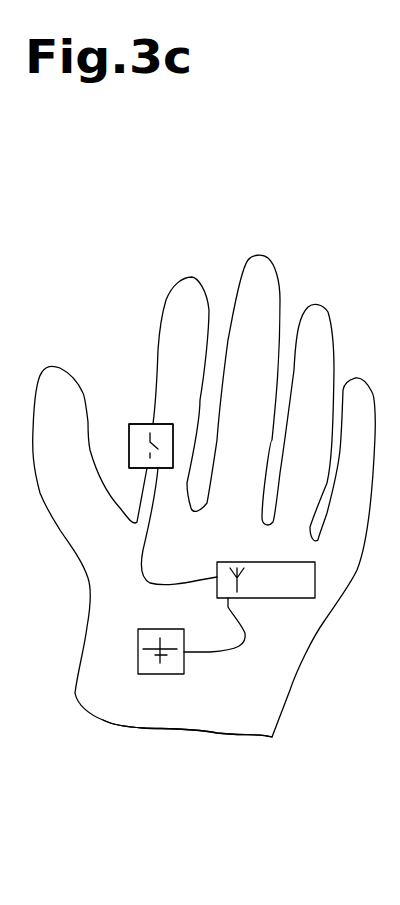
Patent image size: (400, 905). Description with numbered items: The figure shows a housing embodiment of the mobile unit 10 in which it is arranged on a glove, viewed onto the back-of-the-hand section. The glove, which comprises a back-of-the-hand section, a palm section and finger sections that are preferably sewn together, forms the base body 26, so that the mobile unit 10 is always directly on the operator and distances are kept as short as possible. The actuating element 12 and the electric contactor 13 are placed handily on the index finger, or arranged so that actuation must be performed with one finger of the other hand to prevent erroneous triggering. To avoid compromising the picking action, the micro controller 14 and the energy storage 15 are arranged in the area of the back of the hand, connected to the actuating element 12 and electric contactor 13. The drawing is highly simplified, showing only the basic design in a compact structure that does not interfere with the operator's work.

The mobile unit 10 is at (318, 255).
The actuating element 12 is at (140, 432).
The electric contactor 13 is at (151, 446).
The micro controller 14 is at (305, 587).
The energy storage 15 is at (150, 660).
The base body 26 is at (218, 708).